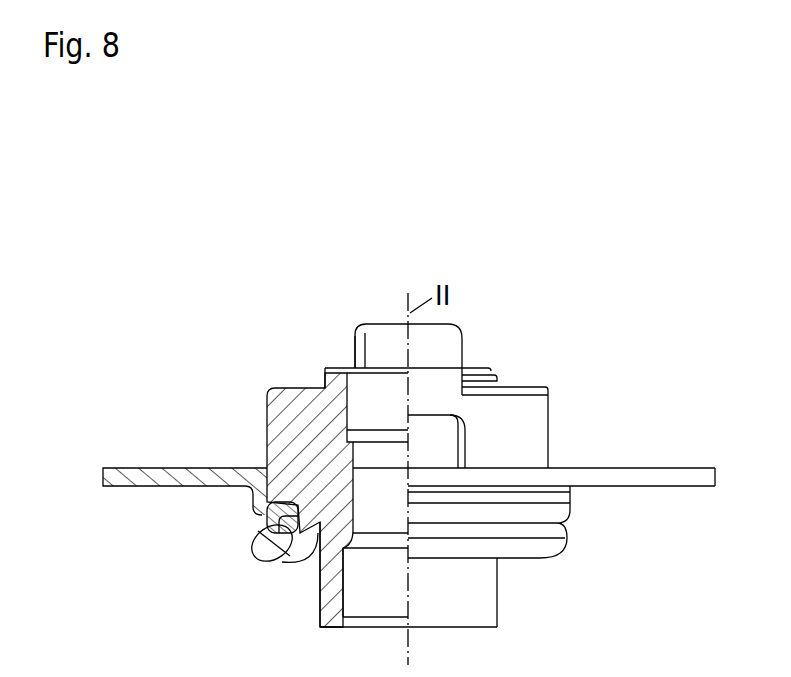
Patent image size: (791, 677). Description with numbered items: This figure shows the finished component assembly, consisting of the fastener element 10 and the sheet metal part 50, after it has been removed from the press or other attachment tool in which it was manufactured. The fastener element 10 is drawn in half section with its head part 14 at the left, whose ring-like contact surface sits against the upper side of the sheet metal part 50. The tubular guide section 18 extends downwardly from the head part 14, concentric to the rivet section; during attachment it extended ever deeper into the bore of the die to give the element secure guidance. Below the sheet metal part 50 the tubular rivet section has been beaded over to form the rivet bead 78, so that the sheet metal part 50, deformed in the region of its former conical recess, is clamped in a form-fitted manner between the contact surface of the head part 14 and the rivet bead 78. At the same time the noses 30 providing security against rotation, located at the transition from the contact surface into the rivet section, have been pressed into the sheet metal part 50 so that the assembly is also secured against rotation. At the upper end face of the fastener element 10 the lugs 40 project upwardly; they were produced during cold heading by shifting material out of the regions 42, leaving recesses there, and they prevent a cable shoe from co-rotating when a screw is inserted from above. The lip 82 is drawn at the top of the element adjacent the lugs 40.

The fastener element 10 is at (550, 411).
The head part 14 is at (268, 412).
The guide section 18 is at (320, 603).
The features providing security against rotation 30 is at (277, 517).
The lugs 40 is at (460, 347).
The regions 42 is at (443, 453).
The sheet metal part 50 is at (645, 488).
The rivet bead 78 is at (268, 553).
The cap lip 82 is at (352, 333).